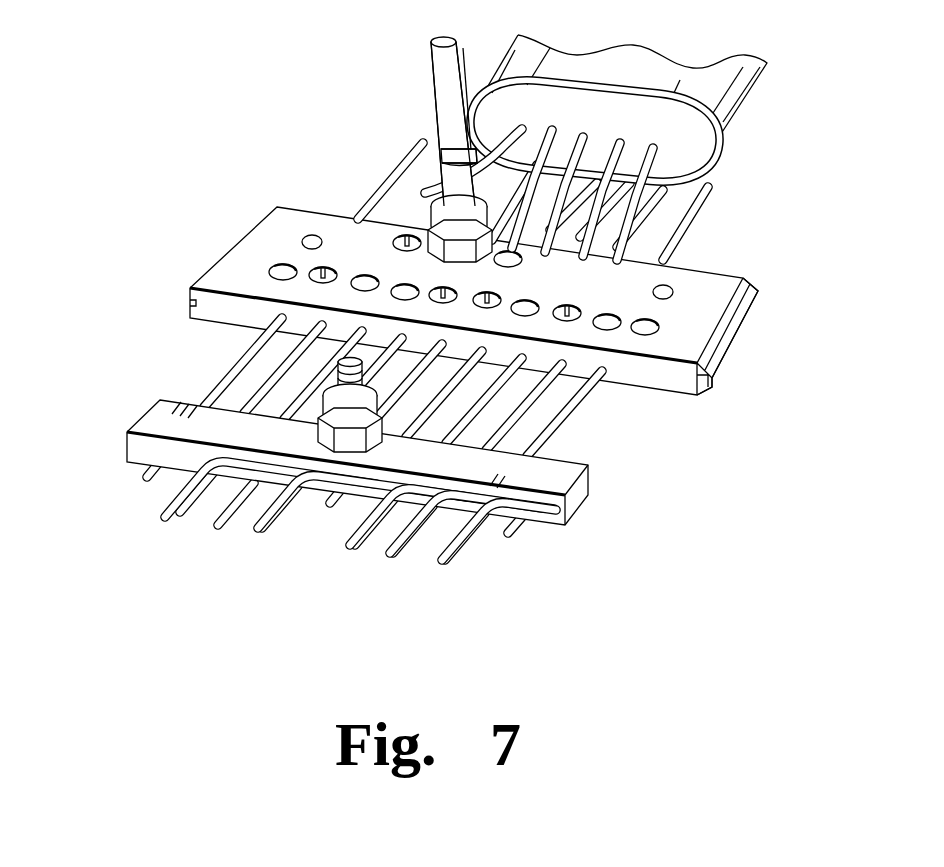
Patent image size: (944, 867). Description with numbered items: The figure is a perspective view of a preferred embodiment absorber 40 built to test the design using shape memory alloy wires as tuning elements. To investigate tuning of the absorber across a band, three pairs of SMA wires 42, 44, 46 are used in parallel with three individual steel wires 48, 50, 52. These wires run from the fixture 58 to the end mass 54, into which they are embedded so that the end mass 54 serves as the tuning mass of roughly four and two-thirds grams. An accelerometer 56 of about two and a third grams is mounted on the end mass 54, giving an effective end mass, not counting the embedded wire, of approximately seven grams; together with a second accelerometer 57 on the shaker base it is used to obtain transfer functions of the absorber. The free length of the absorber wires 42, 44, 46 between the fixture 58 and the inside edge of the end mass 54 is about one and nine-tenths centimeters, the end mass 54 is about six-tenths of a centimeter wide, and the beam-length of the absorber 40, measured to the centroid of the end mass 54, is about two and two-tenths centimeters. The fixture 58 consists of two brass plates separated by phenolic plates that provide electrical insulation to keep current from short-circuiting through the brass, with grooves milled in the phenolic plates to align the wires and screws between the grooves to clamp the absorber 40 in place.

The absorber 40 is at (421, 317).
The SMA wire 42 is at (335, 393).
The SMA wire 44 is at (425, 372).
The SMA wire 46 is at (475, 342).
The steel wire 48 is at (290, 400).
The steel wire 50 is at (388, 442).
The steel wire 52 is at (440, 412).
The end mass 54 is at (547, 507).
The accelerometer 56 is at (268, 505).
The accelerometer 57 is at (452, 194).
The fixture 58 is at (710, 297).